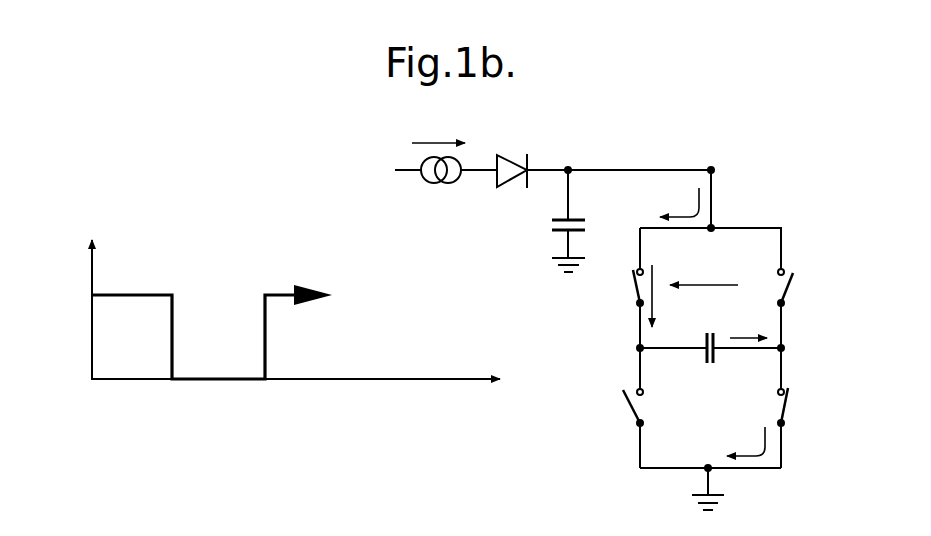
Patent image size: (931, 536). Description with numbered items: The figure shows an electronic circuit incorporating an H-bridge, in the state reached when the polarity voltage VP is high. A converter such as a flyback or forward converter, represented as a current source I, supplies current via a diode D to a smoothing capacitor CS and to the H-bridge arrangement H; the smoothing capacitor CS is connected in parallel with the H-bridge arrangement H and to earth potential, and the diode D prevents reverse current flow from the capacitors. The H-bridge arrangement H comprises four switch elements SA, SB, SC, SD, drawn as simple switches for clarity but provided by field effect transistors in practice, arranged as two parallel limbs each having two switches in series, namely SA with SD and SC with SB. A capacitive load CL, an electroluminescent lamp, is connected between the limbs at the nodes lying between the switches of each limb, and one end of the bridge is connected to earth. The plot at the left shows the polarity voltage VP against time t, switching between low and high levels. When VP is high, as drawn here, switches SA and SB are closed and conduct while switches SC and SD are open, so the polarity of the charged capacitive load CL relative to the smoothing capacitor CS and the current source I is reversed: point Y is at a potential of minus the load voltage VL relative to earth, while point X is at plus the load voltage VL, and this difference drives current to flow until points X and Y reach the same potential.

The diode D is at (512, 158).
The current source I is at (438, 178).
The point X is at (567, 157).
The point Y is at (709, 156).
The H-bridge arrangement H is at (803, 213).
The smoothing capacitor CS is at (549, 221).
The capacitive load CL is at (710, 365).
The switch element SA is at (623, 296).
The switch element SB is at (798, 407).
The switch element SC is at (800, 287).
The switch element SD is at (616, 407).
The load voltage VL is at (704, 270).
The polarity voltage VP is at (191, 311).
The time t is at (296, 395).